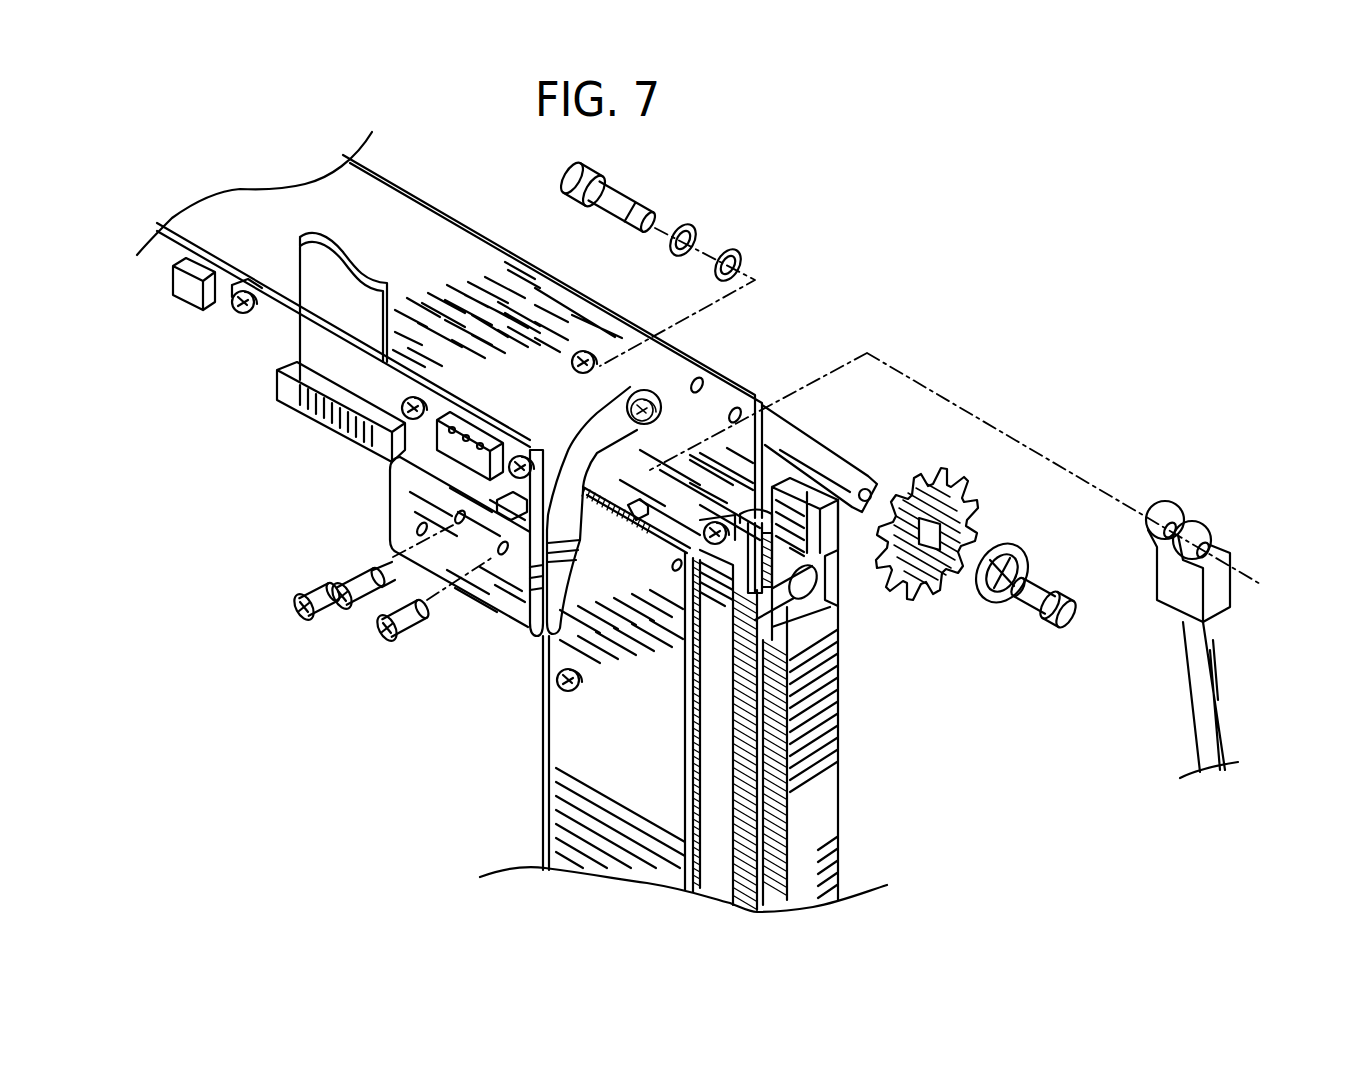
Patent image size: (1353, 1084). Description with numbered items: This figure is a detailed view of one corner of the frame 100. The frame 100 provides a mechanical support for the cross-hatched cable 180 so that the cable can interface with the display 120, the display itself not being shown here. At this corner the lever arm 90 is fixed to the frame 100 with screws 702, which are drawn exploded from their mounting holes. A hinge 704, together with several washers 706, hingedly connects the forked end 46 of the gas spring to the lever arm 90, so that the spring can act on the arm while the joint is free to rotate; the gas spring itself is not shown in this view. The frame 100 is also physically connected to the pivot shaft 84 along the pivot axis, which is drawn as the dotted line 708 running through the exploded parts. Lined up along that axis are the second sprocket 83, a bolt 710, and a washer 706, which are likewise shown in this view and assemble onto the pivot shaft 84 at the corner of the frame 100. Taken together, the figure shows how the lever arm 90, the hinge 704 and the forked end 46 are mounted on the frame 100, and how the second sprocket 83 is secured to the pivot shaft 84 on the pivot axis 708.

The frame 100 is at (284, 481).
The cross-hatched cable 180 is at (320, 300).
The lever arm 90 is at (550, 407).
The hinge 704 is at (605, 197).
The washers 706 is at (735, 252).
The pivot axis 708 is at (975, 560).
The pivot shaft 84 is at (822, 448).
The second sprocket 83 is at (965, 480).
The bolt 710 is at (1040, 607).
The forked end 46 is at (1213, 538).
The display 120 is at (813, 778).
The screws 702 is at (380, 633).